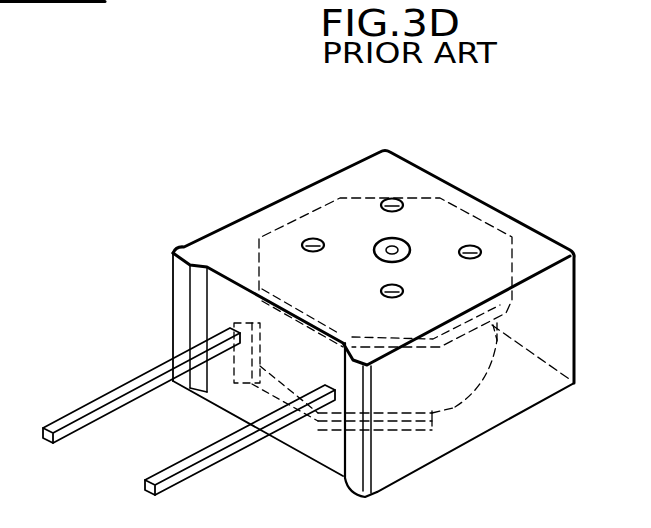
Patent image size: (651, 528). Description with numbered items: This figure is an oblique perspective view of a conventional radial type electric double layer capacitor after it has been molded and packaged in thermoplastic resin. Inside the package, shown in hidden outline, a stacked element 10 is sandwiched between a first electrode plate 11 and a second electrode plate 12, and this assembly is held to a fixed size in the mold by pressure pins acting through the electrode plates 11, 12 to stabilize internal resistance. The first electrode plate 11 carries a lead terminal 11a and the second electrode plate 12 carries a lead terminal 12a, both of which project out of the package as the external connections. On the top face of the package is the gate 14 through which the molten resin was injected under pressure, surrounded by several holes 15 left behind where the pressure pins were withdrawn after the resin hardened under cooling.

The stacked element 10 is at (455, 395).
The first electrode plate 11 is at (497, 397).
The second electrode plate 12 is at (478, 318).
The lead terminal 11a is at (96, 414).
The lead terminal 12a is at (235, 452).
The gate 14 is at (405, 238).
The holes 15 is at (311, 238).